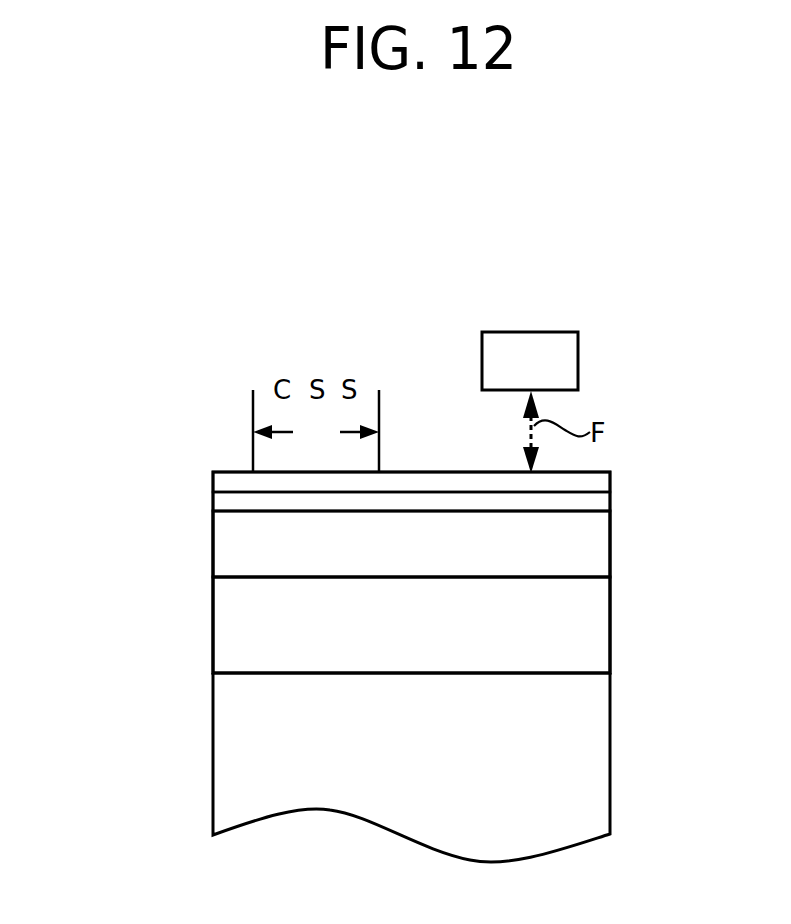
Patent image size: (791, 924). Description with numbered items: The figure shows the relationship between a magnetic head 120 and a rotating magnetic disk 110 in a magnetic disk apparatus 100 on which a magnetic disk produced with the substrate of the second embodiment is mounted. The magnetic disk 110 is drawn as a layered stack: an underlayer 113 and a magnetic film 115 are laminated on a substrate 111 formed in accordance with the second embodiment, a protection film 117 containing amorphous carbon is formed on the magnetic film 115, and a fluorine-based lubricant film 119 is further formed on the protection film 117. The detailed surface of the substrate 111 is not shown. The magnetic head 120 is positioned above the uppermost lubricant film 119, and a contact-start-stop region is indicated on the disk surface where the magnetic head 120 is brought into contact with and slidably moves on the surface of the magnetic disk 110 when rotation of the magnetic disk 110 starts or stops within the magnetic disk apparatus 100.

The magnetic disk apparatus 100 is at (648, 185).
The magnetic disk 110 is at (173, 472).
The substrate 111 is at (610, 752).
The underlayer 113 is at (610, 623).
The magnetic film 115 is at (610, 540).
The protection film 117 is at (610, 500).
The lubricant film 119 is at (610, 474).
The magnetic head 120 is at (532, 332).